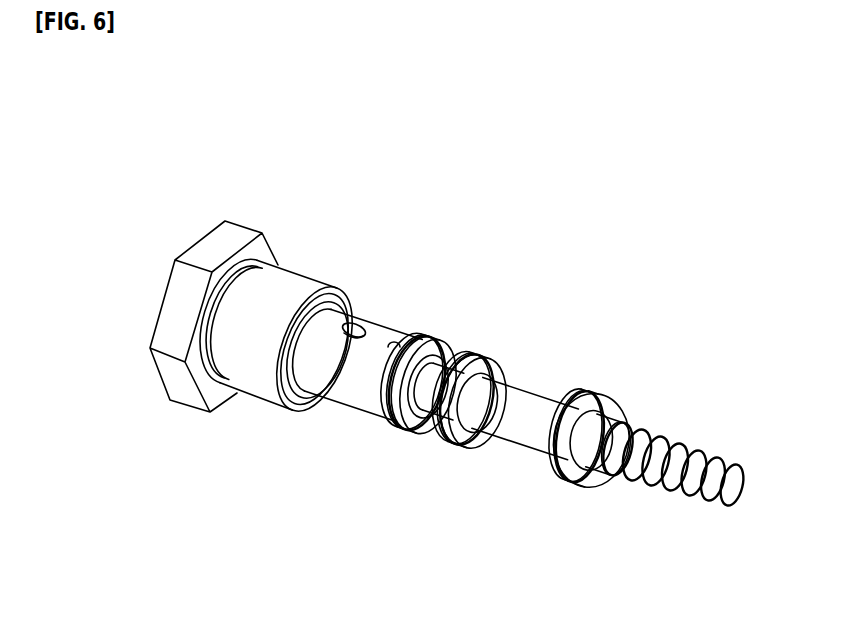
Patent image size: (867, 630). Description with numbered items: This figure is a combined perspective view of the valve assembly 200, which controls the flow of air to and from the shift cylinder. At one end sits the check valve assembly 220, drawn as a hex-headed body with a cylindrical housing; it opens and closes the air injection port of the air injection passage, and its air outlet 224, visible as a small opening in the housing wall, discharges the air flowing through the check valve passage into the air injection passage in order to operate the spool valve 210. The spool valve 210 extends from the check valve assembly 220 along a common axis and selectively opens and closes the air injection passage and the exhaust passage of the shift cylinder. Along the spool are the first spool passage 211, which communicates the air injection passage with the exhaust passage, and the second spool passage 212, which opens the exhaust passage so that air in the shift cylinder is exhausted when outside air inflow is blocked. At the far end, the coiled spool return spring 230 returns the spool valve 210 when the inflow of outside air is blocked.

The valve assembly 200 is at (322, 233).
The spool valve 210 is at (450, 455).
The first spool passage 211 is at (455, 355).
The second spool passage 212 is at (530, 400).
The check valve assembly 220 is at (268, 400).
The air outlet 224 is at (354, 325).
The spool return spring 230 is at (697, 447).